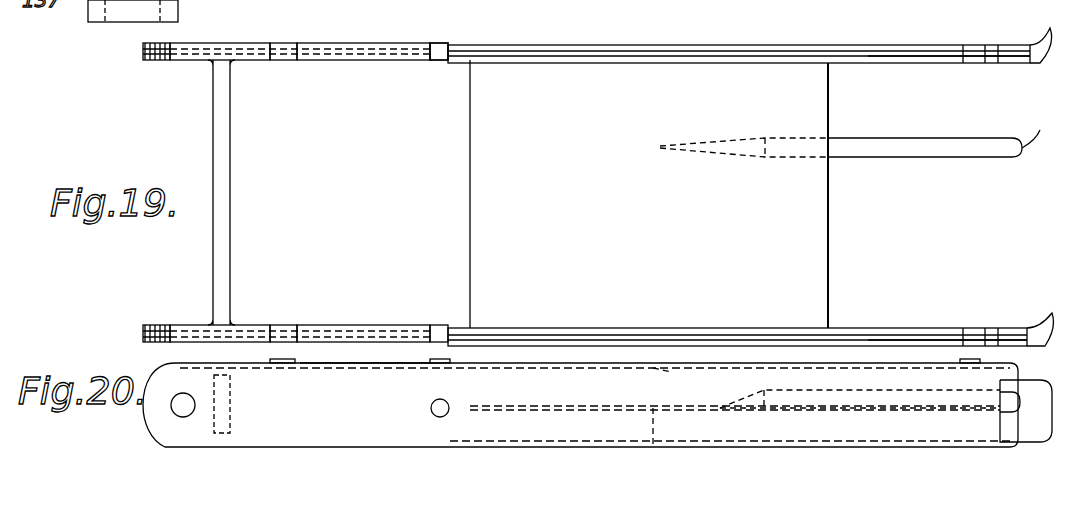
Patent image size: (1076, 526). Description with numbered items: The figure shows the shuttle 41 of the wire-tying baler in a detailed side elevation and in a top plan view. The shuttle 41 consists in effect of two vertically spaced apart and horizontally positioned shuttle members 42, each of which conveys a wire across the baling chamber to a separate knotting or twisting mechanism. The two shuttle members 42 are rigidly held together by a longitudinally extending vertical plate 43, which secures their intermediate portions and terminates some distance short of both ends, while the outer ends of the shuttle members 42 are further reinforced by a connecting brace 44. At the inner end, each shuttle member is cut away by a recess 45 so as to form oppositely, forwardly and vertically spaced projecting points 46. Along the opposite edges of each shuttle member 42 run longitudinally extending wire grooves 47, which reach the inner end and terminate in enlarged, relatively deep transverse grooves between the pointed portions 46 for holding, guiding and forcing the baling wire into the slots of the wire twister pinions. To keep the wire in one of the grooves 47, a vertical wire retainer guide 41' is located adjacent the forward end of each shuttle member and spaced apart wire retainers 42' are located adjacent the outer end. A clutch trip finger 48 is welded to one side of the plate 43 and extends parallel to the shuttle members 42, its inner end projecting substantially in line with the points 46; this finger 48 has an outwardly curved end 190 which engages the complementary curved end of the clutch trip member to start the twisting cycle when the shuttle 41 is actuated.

In FIG. 19, the shuttle 41 is at (295, 33).
In FIG. 20, the shuttle 41 is at (290, 350).
In FIG. 19, the wire retainer guide 41' is at (954, 178).
In FIG. 20, the wire retainer guide 41' is at (949, 359).
In FIG. 19, the shuttle member 42 is at (664, 165).
In FIG. 20, the shuttle member 42 is at (365, 362).
In FIG. 19, the wire retainer 42' is at (395, 167).
In FIG. 20, the wire retainer 42' is at (350, 353).
In FIG. 19, the vertical plate 43 is at (470, 200).
In FIG. 20, the vertical plate 43 is at (561, 406).
In FIG. 19, the connecting brace 44 is at (232, 205).
In FIG. 20, the connecting brace 44 is at (232, 398).
In FIG. 19, the recess 45 is at (985, 64).
In FIG. 20, the recess 45 is at (1000, 420).
In FIG. 19, the projecting point 46 is at (1042, 175).
In FIG. 19, the wire groove 47 is at (885, 55).
In FIG. 20, the wire groove 47 is at (655, 408).
In FIG. 19, the clutch trip finger 48 is at (950, 158).
In FIG. 20, the clutch trip finger 48 is at (908, 400).
In FIG. 19, the outwardly curved end 190 is at (1020, 125).